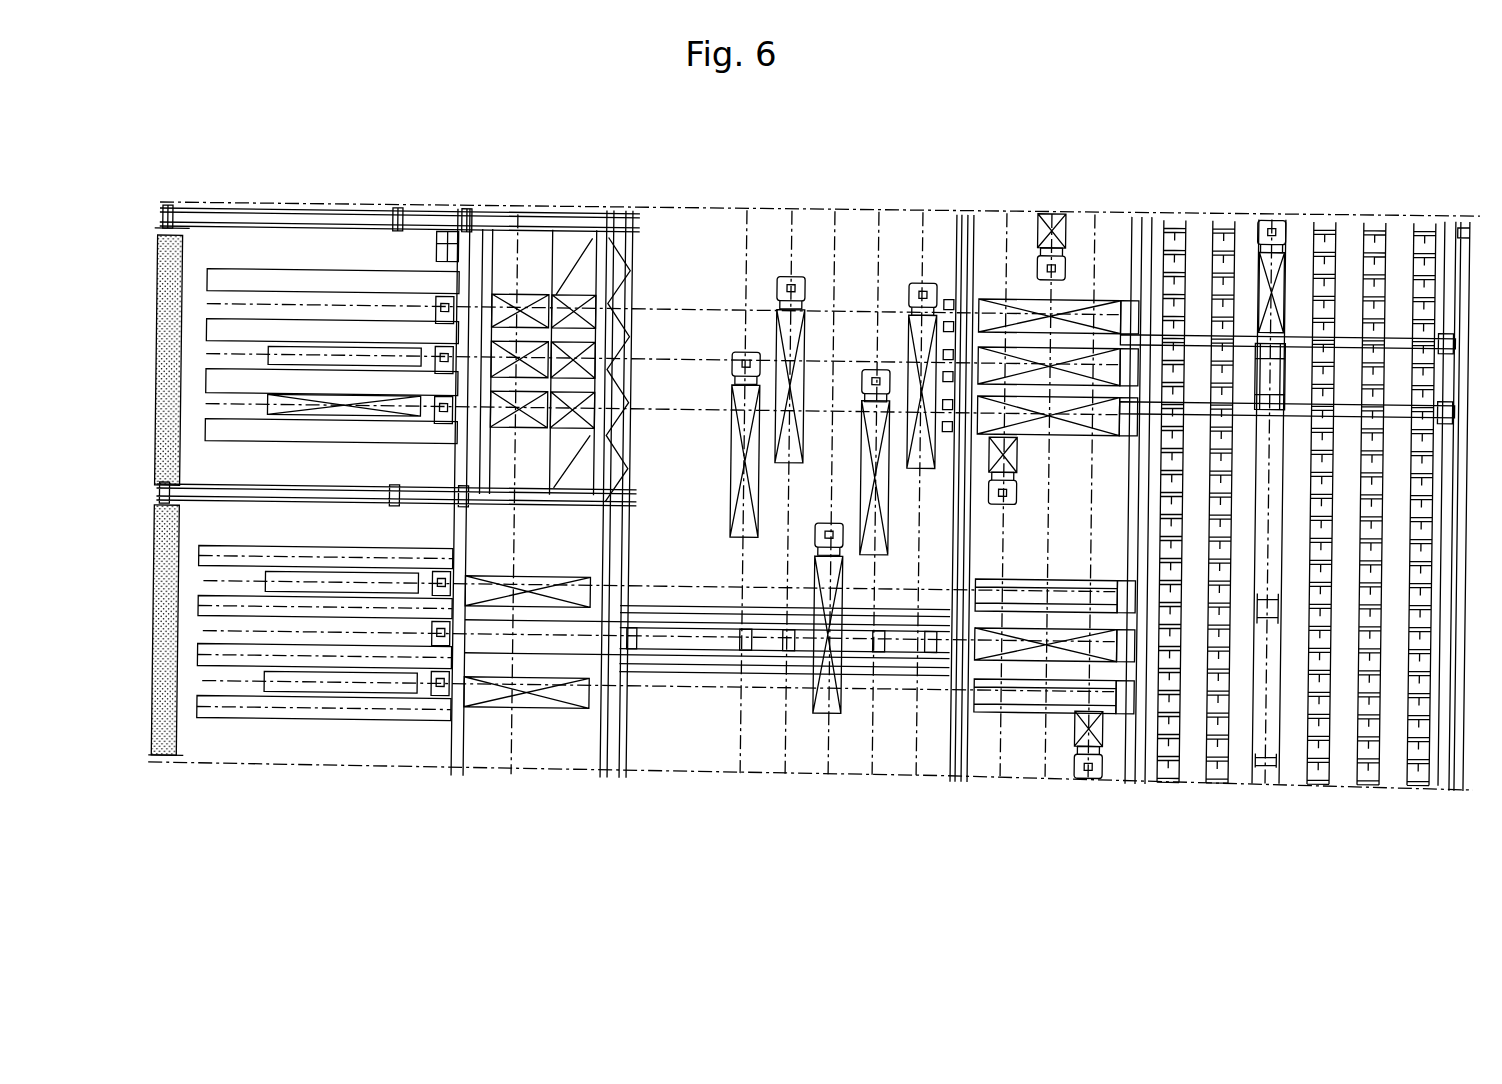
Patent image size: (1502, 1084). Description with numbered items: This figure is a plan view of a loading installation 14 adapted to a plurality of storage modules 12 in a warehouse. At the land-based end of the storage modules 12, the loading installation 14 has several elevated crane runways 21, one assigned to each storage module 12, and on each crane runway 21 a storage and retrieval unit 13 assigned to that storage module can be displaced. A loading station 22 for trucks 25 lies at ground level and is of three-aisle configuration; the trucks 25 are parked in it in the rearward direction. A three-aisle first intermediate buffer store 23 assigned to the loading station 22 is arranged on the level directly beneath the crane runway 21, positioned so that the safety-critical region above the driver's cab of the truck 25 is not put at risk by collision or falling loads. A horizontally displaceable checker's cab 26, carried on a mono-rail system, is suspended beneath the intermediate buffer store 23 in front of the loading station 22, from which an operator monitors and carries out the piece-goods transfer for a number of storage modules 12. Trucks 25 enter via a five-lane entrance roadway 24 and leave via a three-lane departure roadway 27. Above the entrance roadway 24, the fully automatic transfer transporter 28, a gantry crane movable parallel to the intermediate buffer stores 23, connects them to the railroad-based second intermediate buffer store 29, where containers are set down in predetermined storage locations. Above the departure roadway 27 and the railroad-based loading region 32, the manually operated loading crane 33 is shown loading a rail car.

The storage module 12 is at (163, 240).
The elevated crane runway 21 is at (312, 215).
The checker's cab 26 is at (445, 238).
The storage and retrieval unit 13 is at (484, 246).
The loading installation 14 is at (858, 193).
The loading crane 33 is at (1200, 338).
The loading station 22 is at (350, 707).
The truck 25 is at (410, 690).
The first intermediate buffer store 23 is at (537, 710).
The transfer transporter 28 is at (707, 670).
The entrance roadway 24 is at (806, 772).
The second intermediate buffer store 29 is at (998, 713).
The departure roadway 27 is at (1034, 778).
The loading region 32 is at (1300, 785).